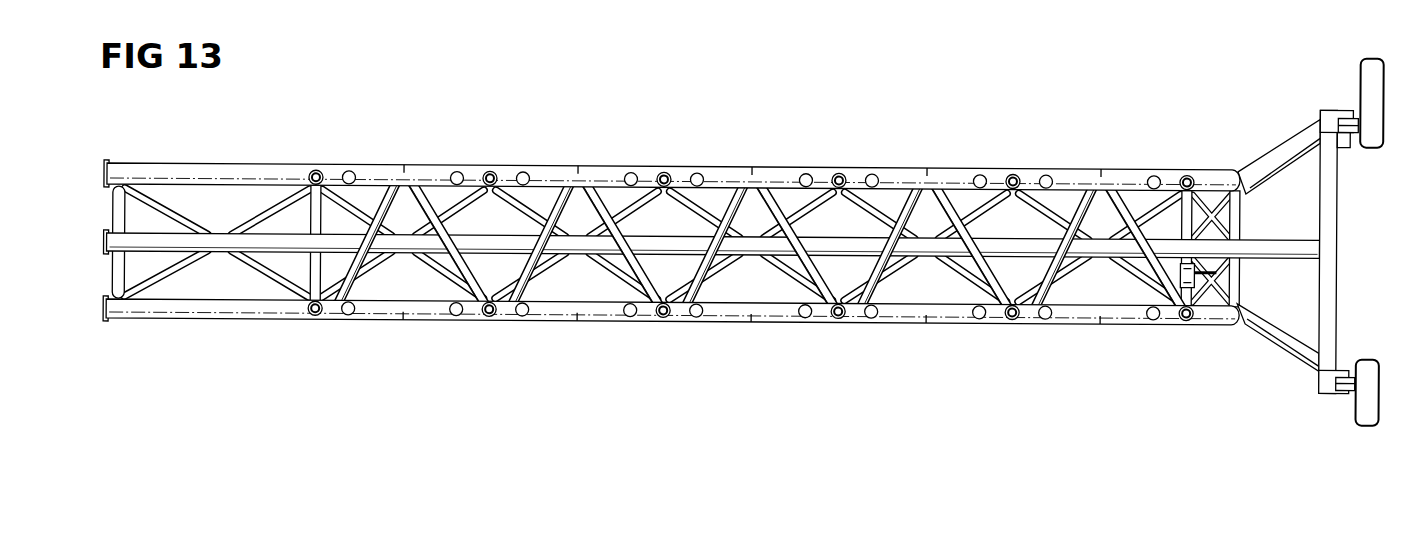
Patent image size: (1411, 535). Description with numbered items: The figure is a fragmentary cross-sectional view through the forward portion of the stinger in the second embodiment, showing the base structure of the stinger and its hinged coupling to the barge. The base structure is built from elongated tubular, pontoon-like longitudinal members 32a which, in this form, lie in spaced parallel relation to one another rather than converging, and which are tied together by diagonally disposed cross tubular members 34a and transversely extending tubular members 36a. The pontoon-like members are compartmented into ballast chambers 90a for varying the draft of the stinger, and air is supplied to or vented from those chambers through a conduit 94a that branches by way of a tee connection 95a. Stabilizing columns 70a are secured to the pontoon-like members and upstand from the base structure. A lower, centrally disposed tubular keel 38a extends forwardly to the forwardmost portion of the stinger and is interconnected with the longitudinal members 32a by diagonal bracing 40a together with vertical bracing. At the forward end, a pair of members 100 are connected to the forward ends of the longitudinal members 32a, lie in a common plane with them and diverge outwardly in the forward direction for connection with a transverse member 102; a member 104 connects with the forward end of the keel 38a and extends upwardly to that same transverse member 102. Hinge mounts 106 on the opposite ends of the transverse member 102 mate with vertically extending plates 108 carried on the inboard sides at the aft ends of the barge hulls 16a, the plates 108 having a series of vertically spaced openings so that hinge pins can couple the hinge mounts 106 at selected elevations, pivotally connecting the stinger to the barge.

The keel 38a is at (148, 226).
The longitudinal members 32a is at (270, 163).
The transversely extending tubular members 36a is at (325, 184).
The diagonally disposed cross tubular members 34a is at (375, 286).
The diagonal bracing 40a is at (496, 184).
The stabilizing columns 70a is at (667, 168).
The ballast chambers 90a is at (578, 298).
The conduit 94a is at (1220, 292).
The tee connection 95a is at (1186, 296).
The members 100 is at (1274, 152).
The transverse member 102 is at (1322, 113).
The member 104 is at (1284, 233).
The hinge mounts 106 is at (1350, 103).
The plates 108 is at (1343, 130).
The hulls 16a is at (1370, 52).